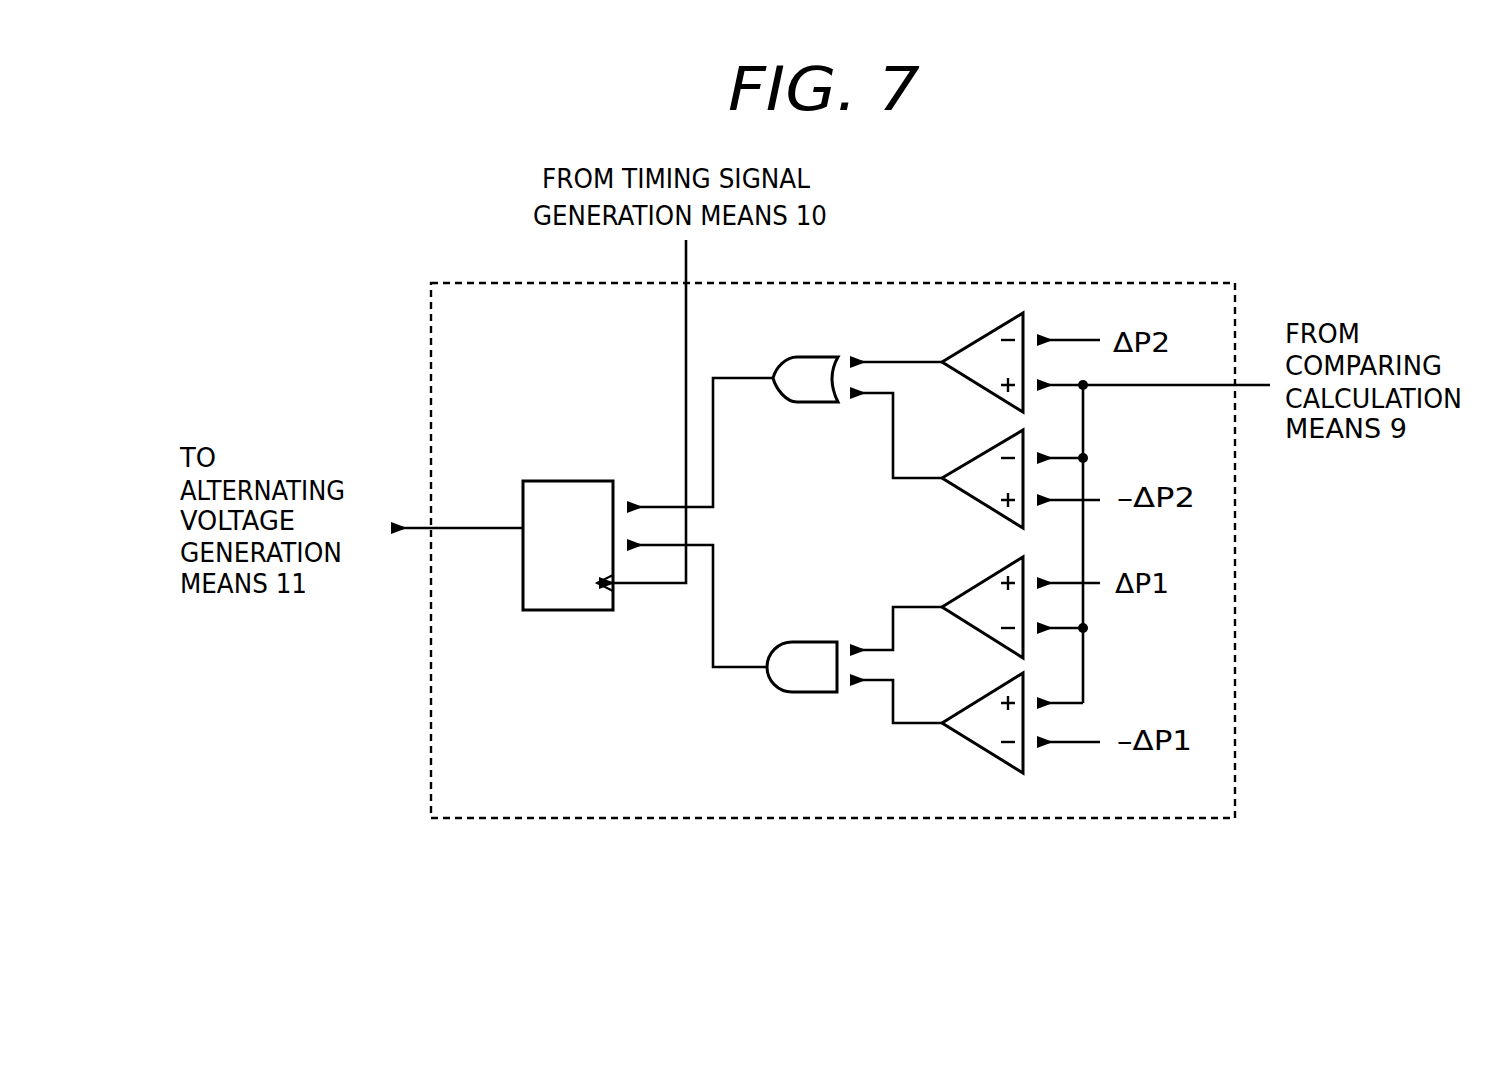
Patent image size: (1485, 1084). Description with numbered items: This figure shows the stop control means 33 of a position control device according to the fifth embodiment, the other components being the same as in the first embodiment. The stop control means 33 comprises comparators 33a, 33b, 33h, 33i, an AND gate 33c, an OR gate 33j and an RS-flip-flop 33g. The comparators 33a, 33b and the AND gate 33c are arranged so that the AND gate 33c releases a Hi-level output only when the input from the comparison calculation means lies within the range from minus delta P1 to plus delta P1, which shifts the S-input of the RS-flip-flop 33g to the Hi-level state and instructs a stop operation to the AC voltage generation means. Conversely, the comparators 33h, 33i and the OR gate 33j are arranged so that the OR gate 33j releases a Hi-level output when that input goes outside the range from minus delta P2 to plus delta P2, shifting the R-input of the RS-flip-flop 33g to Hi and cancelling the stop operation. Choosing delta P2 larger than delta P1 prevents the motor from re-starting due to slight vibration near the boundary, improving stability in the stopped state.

The stop control means 33 is at (1145, 282).
The comparator 33a is at (990, 697).
The comparator 33b is at (980, 585).
The AND gate 33c is at (826, 642).
The RS-flip-flop 33g is at (592, 481).
The comparator 33h is at (978, 338).
The comparator 33i is at (990, 450).
The OR gate 33j is at (826, 357).